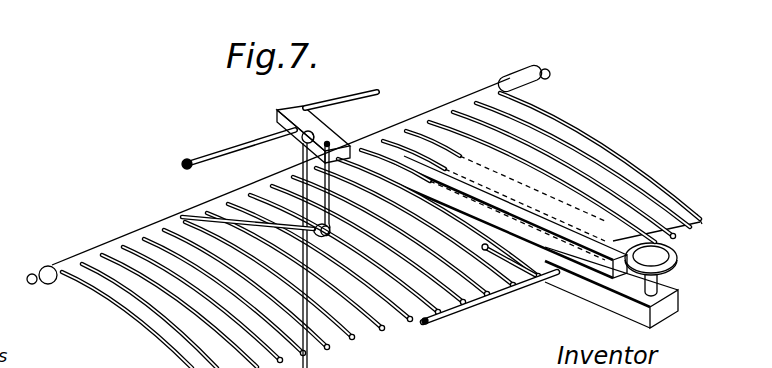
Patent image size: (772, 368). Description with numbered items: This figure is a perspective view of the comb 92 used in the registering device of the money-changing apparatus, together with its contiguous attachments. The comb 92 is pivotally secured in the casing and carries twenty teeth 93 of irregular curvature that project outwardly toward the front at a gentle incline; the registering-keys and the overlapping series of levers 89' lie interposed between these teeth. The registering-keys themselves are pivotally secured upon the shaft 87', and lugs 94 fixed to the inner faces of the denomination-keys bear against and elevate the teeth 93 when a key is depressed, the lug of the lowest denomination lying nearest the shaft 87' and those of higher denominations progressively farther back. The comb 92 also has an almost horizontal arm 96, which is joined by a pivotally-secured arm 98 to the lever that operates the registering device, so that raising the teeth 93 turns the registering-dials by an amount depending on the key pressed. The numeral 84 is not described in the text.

The handle rod 84 is at (232, 149).
The shaft 87' is at (489, 300).
The levers 89' is at (322, 225).
The comb 92 is at (288, 174).
The teeth 93 is at (381, 230).
The lugs 94 is at (484, 250).
The horizontal arm 96 is at (210, 216).
The pivotally-secured arm 98 is at (332, 226).